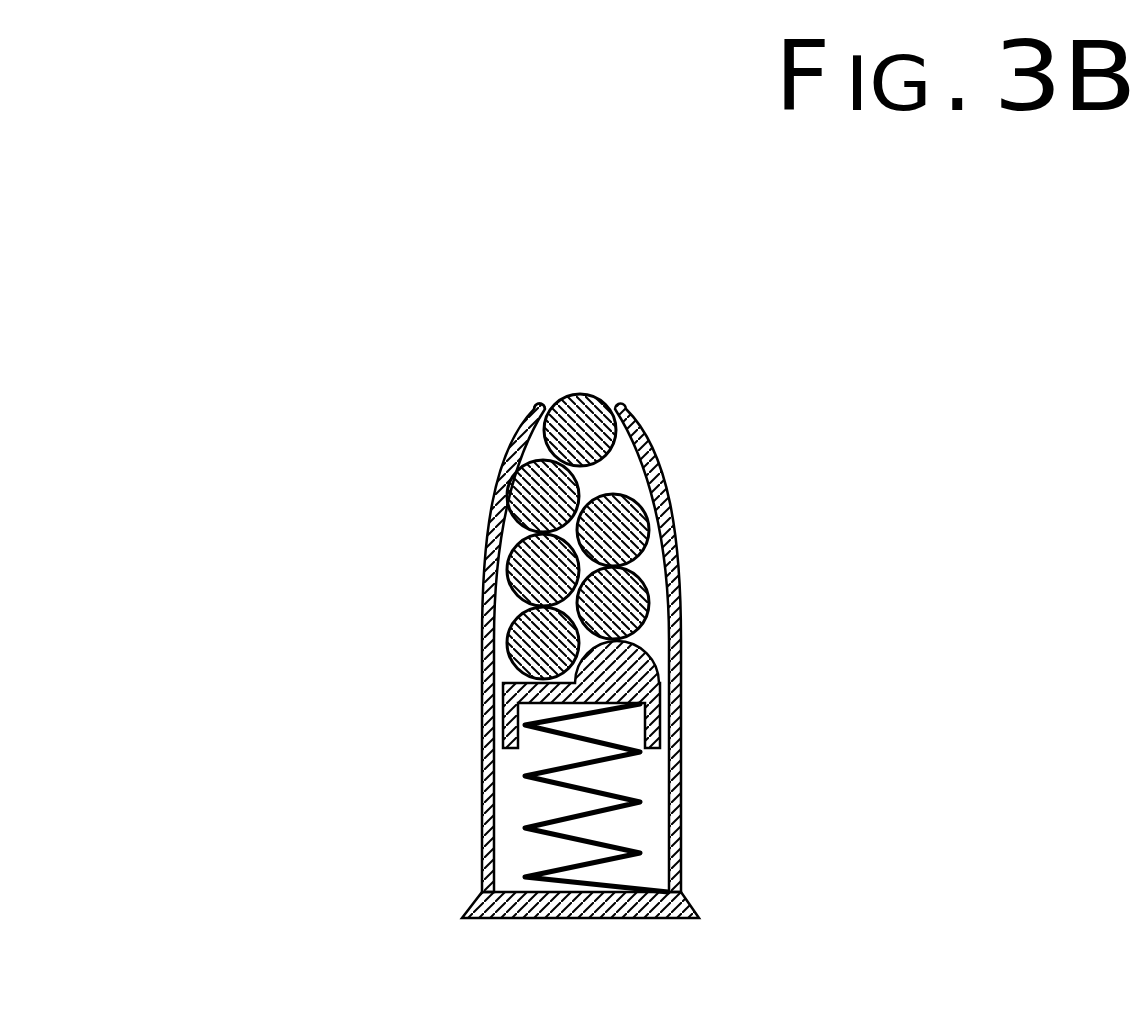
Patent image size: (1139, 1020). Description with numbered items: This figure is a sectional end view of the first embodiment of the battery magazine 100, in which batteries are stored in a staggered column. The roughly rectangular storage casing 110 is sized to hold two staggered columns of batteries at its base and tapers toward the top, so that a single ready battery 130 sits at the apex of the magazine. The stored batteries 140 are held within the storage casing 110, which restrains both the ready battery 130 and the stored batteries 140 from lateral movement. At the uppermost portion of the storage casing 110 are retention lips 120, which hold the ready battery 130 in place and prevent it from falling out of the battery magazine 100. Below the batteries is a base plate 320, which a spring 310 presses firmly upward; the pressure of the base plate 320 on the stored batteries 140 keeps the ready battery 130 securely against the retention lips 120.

The battery magazine 100 is at (277, 395).
The storage casing 110 is at (483, 608).
The retention lips 120 is at (536, 412).
The ready battery 130 is at (585, 412).
The stored batteries 140 is at (548, 655).
The spring 310 is at (605, 816).
The base plate 320 is at (607, 675).